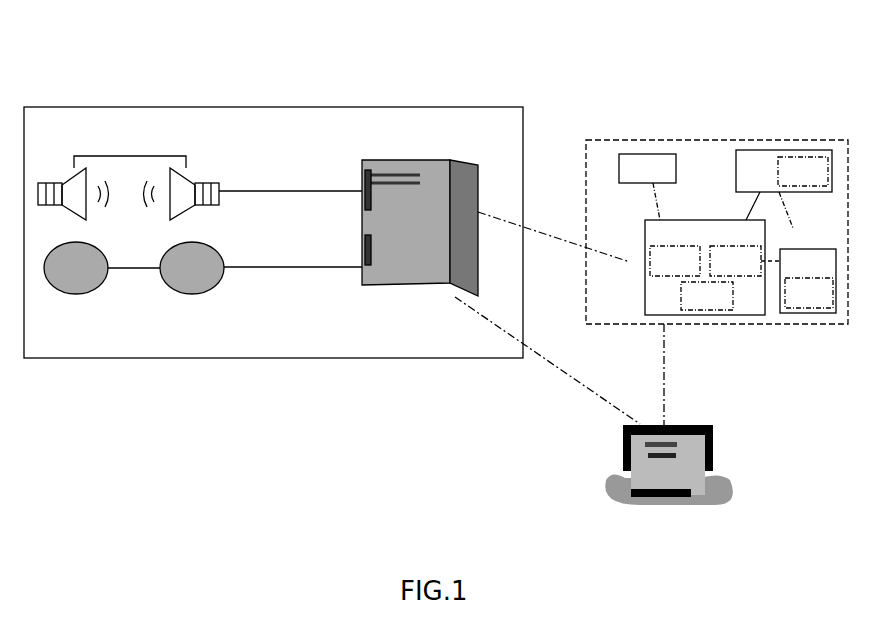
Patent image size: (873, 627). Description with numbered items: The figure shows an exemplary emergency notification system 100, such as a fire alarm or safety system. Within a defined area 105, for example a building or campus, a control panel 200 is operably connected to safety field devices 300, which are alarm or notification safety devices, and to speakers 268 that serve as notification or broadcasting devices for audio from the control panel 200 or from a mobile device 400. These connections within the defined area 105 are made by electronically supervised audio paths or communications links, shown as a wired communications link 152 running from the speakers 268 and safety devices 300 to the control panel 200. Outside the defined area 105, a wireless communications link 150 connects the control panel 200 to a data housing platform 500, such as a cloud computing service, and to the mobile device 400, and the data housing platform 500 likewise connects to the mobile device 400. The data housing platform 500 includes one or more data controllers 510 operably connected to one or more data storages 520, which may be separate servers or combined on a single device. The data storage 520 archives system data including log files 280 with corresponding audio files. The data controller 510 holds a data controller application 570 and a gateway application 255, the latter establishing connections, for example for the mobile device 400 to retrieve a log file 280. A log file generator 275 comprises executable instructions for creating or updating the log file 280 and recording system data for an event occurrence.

The emergency notification system 100 is at (698, 66).
The defined area 105 is at (237, 107).
The wireless communications link 150 is at (568, 246).
The wired communications link 152 is at (276, 191).
The control panel 200 is at (415, 162).
The gateway application 255 is at (745, 261).
The speakers 268 is at (170, 207).
The log file generator 275 is at (707, 296).
The log file 280 is at (805, 232).
The safety field device 300 is at (170, 278).
The mobile device 400 is at (622, 458).
The data housing platform 500 is at (715, 140).
The data controller 510 is at (740, 267).
The data storage 520 is at (725, 189).
The data controller application 570 is at (675, 261).